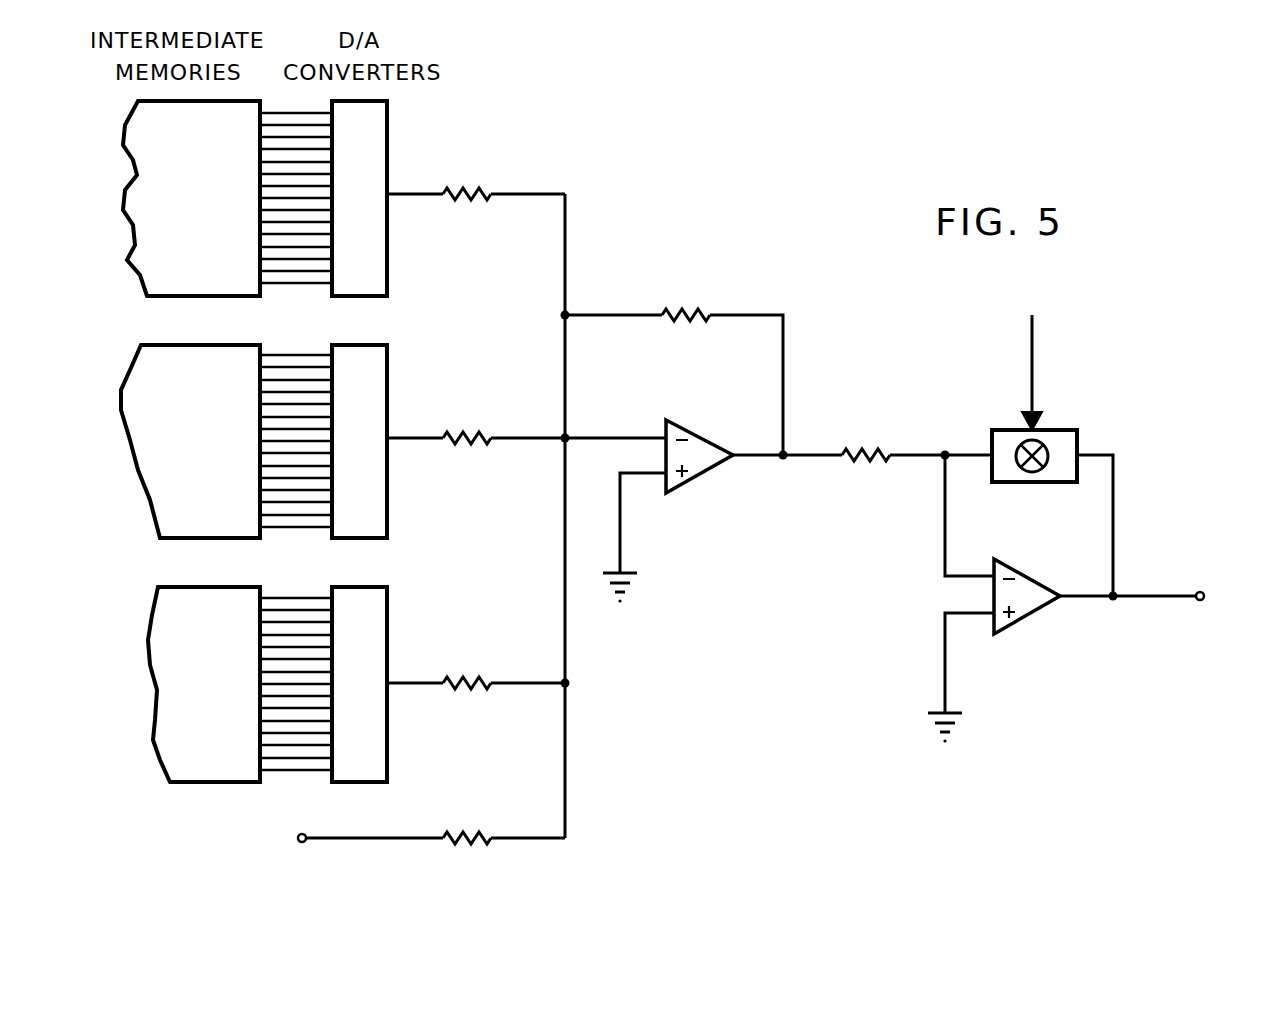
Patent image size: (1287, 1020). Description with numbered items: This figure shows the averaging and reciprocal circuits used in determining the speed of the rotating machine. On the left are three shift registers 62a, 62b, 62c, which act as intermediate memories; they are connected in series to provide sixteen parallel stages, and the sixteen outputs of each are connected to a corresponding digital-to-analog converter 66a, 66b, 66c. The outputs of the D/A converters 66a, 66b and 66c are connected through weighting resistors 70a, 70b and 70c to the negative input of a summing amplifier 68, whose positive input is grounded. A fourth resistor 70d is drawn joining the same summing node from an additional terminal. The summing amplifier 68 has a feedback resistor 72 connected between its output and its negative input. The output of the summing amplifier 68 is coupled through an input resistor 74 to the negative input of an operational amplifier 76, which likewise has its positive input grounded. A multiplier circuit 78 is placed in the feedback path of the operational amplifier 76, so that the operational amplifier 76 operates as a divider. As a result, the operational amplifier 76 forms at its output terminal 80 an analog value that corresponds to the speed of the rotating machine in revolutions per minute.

The shift register 62a is at (148, 180).
The shift register 62b is at (146, 416).
The shift register 62c is at (178, 665).
The digital-to-analog converter 66a is at (372, 240).
The digital-to-analog converter 66b is at (371, 380).
The digital-to-analog converter 66c is at (371, 620).
The weighting resistor 70a is at (465, 202).
The weighting resistor 70b is at (475, 433).
The weighting resistor 70c is at (474, 673).
The resistor 70d is at (476, 830).
The feedback resistor 72 is at (685, 308).
The summing amplifier 68 is at (698, 478).
The input resistor 74 is at (863, 462).
The multiplier circuit 78 is at (1077, 440).
The operational amplifier 76 is at (1027, 577).
The output terminal 80 is at (1203, 599).